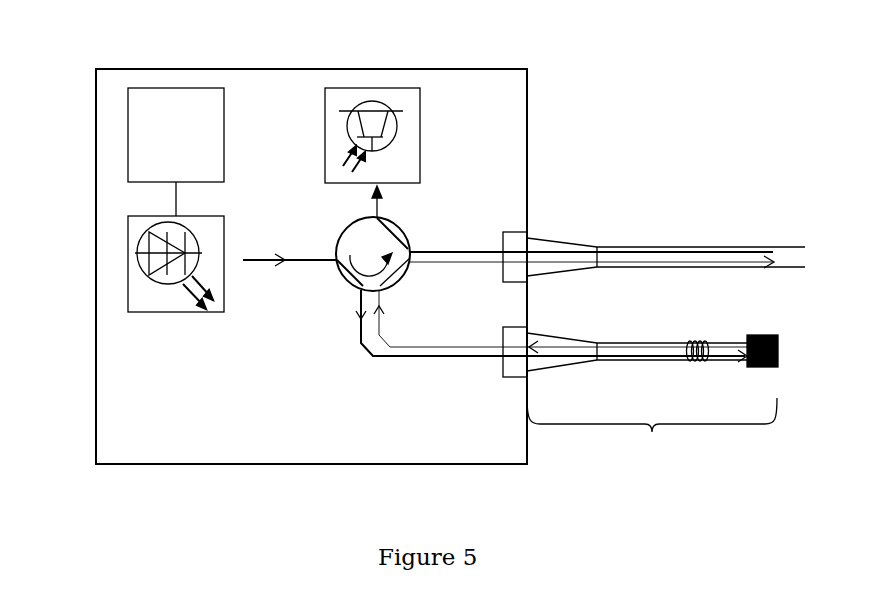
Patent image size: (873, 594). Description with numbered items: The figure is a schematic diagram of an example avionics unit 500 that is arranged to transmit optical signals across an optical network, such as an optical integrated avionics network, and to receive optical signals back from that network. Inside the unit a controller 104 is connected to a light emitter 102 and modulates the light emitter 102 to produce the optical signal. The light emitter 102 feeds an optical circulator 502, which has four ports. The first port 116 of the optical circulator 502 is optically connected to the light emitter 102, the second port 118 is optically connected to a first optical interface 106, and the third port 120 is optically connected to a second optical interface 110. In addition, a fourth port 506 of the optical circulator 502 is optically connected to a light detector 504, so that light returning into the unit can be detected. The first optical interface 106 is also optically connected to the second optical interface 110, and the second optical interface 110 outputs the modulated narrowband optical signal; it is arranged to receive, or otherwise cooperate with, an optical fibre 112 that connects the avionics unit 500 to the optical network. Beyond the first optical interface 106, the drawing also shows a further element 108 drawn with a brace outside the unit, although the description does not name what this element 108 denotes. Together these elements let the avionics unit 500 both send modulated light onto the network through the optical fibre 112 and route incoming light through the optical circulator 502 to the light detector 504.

The avionics unit 500 is at (268, 68).
The controller 104 is at (128, 135).
The light emitter 102 is at (128, 273).
The light detector 504 is at (385, 93).
The optical circulator 502 is at (397, 232).
The fourth port 506 is at (366, 217).
The first port 116 is at (337, 253).
The second port 118 is at (357, 300).
The third port 120 is at (417, 244).
The second optical interface 110 is at (515, 230).
The optical fibre 112 is at (663, 250).
The first optical interface 106 is at (503, 377).
The sensor probe assembly 108 is at (652, 432).